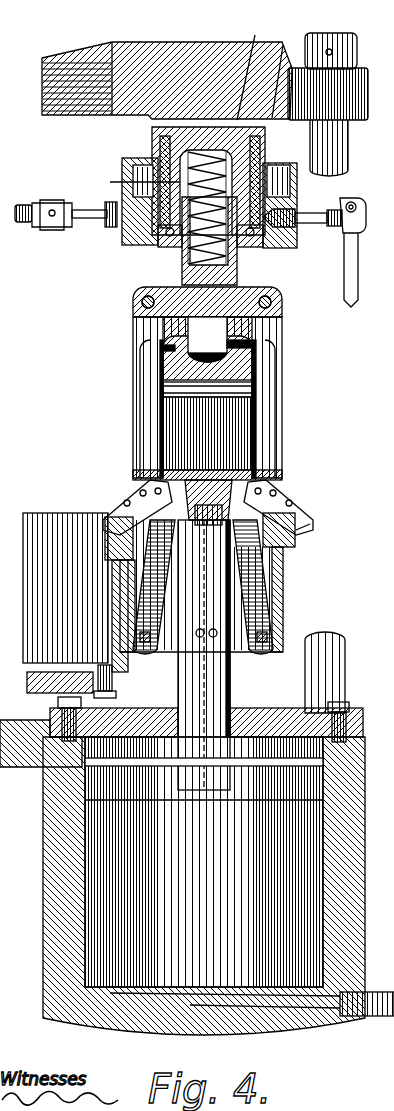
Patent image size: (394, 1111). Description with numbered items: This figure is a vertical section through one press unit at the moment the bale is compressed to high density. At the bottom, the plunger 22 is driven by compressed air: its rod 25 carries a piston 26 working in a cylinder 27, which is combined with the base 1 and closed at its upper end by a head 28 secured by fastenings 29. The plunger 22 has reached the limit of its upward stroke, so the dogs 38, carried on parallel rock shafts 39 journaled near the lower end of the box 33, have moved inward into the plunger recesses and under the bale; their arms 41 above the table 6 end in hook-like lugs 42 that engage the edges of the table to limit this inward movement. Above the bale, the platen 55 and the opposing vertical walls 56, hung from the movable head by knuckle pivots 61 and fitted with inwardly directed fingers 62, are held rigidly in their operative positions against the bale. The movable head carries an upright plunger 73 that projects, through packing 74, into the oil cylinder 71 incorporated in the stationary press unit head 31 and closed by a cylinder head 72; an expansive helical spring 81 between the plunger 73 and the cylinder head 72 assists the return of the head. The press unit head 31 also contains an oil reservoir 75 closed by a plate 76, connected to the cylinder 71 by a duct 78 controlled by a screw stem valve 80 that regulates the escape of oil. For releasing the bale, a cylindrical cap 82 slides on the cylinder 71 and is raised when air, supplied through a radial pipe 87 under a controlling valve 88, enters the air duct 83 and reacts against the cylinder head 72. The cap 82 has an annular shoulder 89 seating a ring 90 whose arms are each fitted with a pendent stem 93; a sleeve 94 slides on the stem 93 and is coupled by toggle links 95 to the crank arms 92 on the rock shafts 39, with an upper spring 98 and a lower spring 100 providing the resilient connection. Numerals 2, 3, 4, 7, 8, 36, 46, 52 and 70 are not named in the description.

The base 1 is at (30, 768).
The head 2 is at (206, 50).
The post 3 is at (349, 152).
The flange 4 is at (27, 689).
The table 6 is at (310, 528).
The block 7 is at (110, 636).
The bolt 8 is at (116, 694).
The plunger 22 is at (230, 503).
The rod 25 is at (204, 655).
The piston 26 is at (204, 862).
The cylinder 27 is at (50, 881).
The head 28 is at (262, 714).
The fastenings 29 is at (58, 703).
The press unit head 31 is at (121, 173).
The box 33 is at (285, 585).
The pipe 36 is at (362, 994).
The dogs 38 is at (203, 587).
The rock shafts 39 is at (145, 645).
The arms 41 is at (138, 500).
The hook-like lugs 42 is at (110, 516).
The lugs 46 is at (130, 545).
The ring 52 is at (150, 477).
The platen 55 is at (175, 378).
The vertical walls 56 is at (272, 358).
The knuckle pivots 61 is at (133, 303).
The fingers 62 is at (178, 286).
The packing ring 70 is at (180, 390).
The cylinder 71 is at (320, 71).
The cylinder head 72 is at (250, 67).
The plunger 73 is at (182, 268).
The packing 74 is at (166, 240).
The oil reservoir 75 is at (297, 184).
The plate 76 is at (278, 166).
The outlet duct 78 is at (288, 215).
The manually operated valve 80 is at (312, 224).
The expansive helical spring 81 is at (136, 183).
The cylindrical cap 82 is at (140, 162).
The air duct 83 is at (124, 232).
The radial pipes 87 is at (92, 222).
The controlling valves 88 is at (52, 200).
The annular shoulder 89 is at (262, 152).
The ring 90 is at (152, 138).
The crank arms 92 is at (200, 629).
The stem 93 is at (230, 270).
The sleeve 94 is at (256, 402).
The toggle links 95 is at (262, 458).
The upper spring 98 is at (163, 355).
The lower spring 100 is at (145, 423).